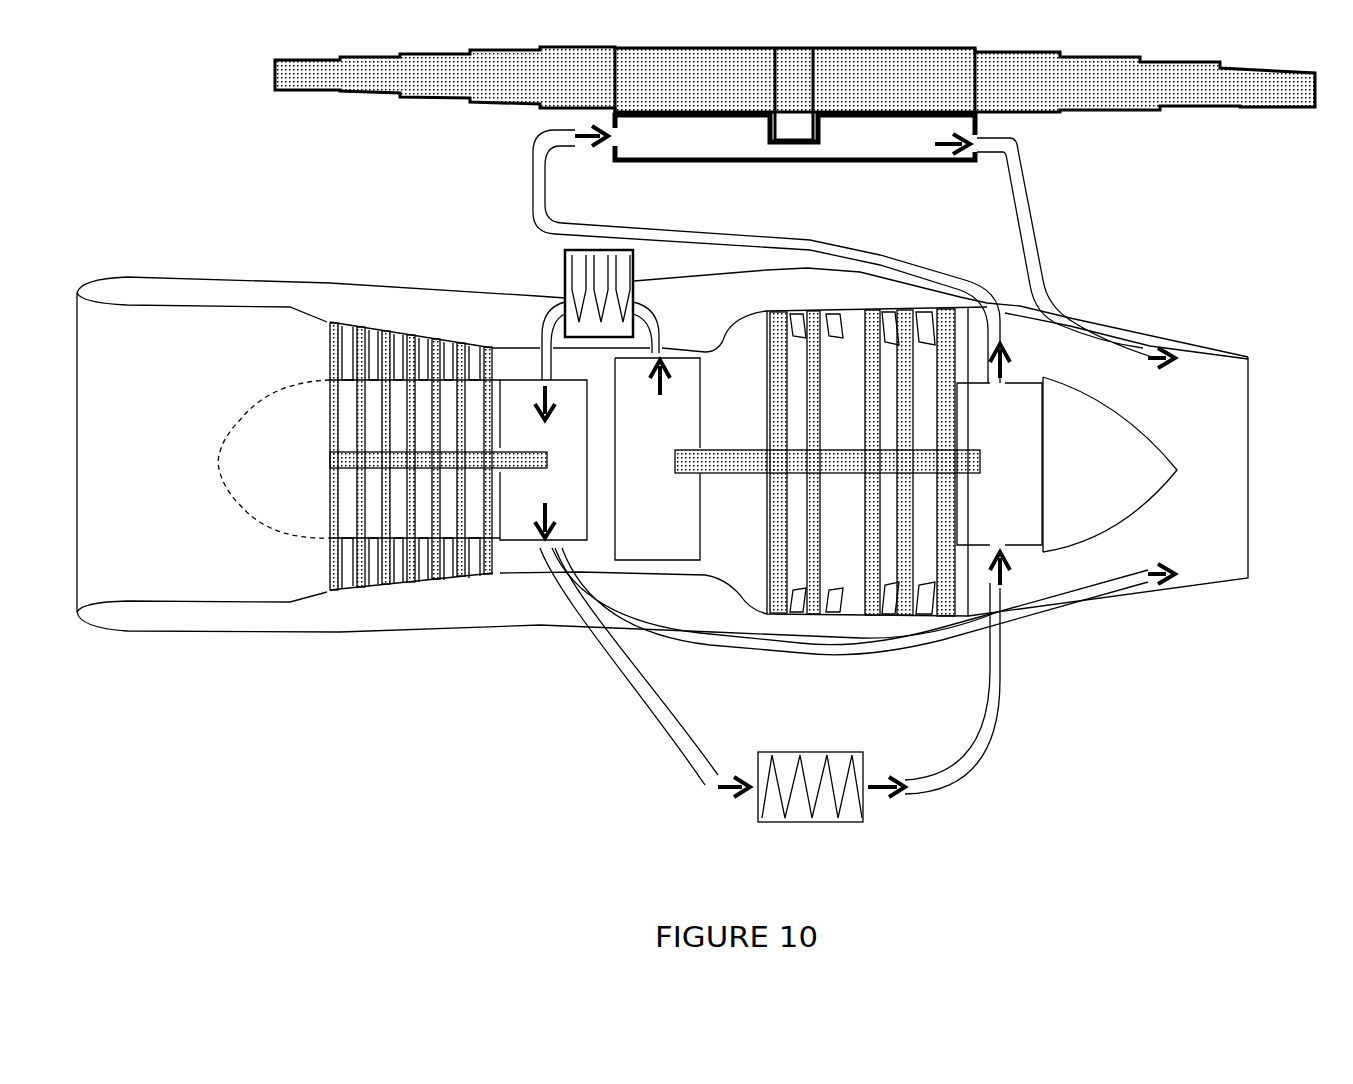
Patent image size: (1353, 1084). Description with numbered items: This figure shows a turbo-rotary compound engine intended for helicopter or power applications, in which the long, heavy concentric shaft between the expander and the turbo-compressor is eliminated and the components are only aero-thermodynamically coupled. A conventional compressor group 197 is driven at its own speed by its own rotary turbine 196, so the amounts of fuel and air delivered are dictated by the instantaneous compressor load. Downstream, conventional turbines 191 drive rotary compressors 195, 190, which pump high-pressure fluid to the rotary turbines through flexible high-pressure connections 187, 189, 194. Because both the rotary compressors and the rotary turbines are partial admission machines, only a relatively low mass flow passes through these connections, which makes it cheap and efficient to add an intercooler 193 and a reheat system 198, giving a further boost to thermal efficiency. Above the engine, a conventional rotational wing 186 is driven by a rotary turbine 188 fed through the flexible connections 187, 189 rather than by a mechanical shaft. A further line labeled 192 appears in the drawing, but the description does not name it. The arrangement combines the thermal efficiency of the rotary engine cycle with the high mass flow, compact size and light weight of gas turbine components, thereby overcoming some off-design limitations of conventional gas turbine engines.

The rotational wing 186 is at (460, 80).
The flexible high-pressure connection 187 is at (537, 215).
The rotary turbine 188 is at (867, 135).
The flexible high-pressure connection 189 is at (1027, 237).
The rotary compressor 190 is at (1005, 503).
The turbine 191 is at (947, 620).
The bypass conduit to exhaust 192 is at (805, 648).
The intercooler 193 is at (770, 808).
The flexible high-pressure connection 194 is at (668, 757).
The rotary compressor 195 is at (665, 528).
The rotary turbine 196 is at (513, 512).
The compressor group 197 is at (329, 590).
The reheat system 198 is at (565, 265).